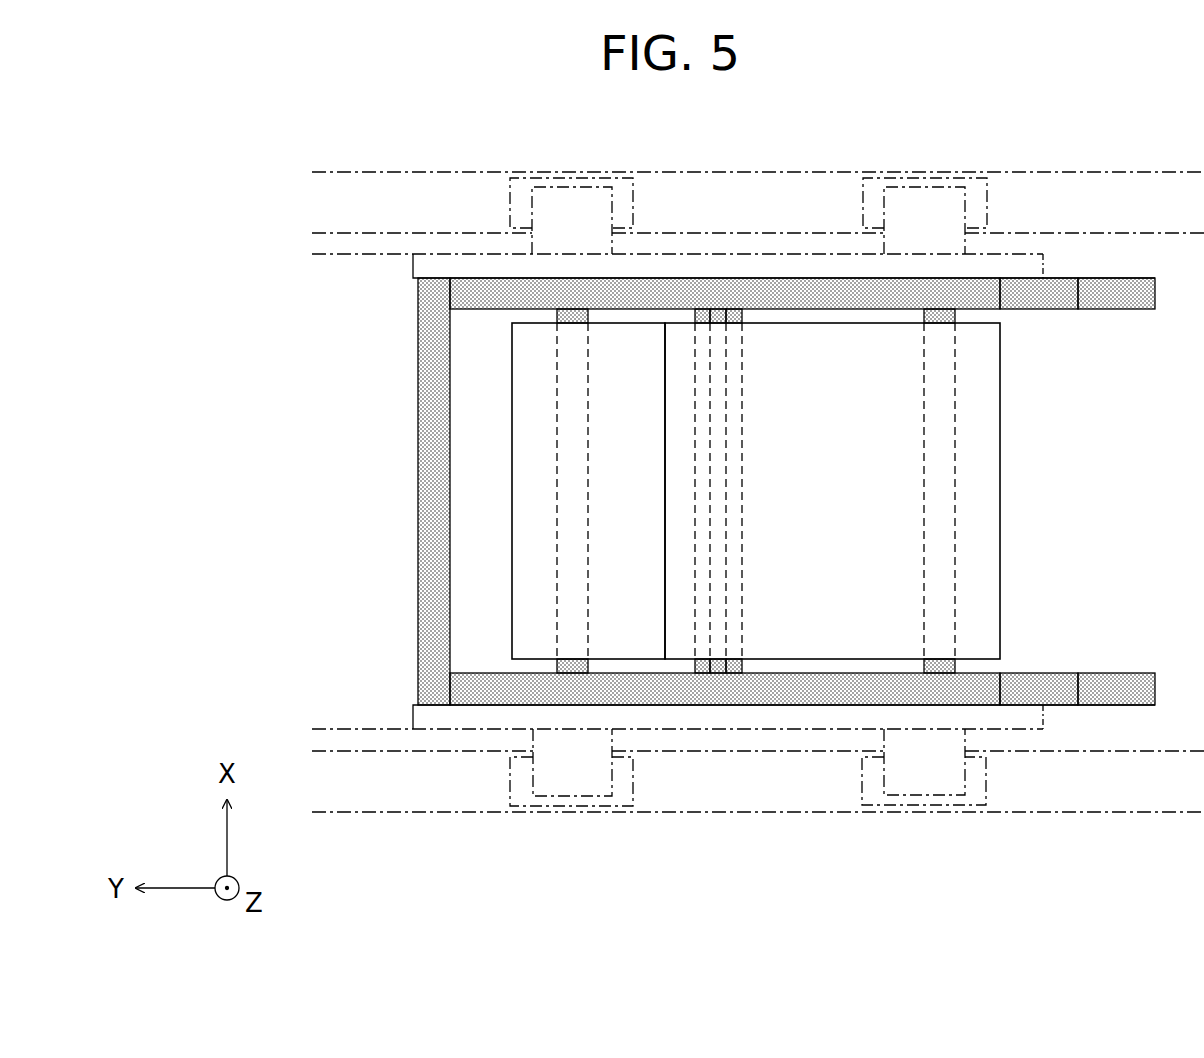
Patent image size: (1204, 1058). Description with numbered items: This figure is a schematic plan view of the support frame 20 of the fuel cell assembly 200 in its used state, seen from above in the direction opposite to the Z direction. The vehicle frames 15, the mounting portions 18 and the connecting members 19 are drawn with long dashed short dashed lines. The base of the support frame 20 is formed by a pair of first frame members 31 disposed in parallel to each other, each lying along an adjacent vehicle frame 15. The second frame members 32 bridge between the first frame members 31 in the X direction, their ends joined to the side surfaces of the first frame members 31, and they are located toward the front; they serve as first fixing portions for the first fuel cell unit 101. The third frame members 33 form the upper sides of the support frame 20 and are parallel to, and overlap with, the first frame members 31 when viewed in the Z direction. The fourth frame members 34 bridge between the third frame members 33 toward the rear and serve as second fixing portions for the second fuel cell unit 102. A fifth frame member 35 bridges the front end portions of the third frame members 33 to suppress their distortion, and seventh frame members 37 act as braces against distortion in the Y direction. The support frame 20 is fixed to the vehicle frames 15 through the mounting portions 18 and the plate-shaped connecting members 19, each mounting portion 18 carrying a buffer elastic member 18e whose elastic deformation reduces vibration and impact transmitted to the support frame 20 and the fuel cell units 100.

The fuel cell assembly 200 is at (258, 318).
The support frame 20 is at (413, 236).
The vehicle frames 15 is at (742, 190).
The mounting portions 18 is at (560, 185).
The buffer elastic member 18e is at (552, 208).
The connecting members 19 is at (412, 263).
The first frame members 31 is at (1123, 300).
The second frame members 32 is at (570, 290).
The third frame members 33 is at (468, 288).
The fourth frame members 34 is at (735, 667).
The fifth frame member 35 is at (430, 480).
The seventh frame members 37 is at (1028, 300).
The fuel cell units 100 is at (691, 491).
The first fuel cell unit 101 is at (537, 497).
The second fuel cell unit 102 is at (983, 497).